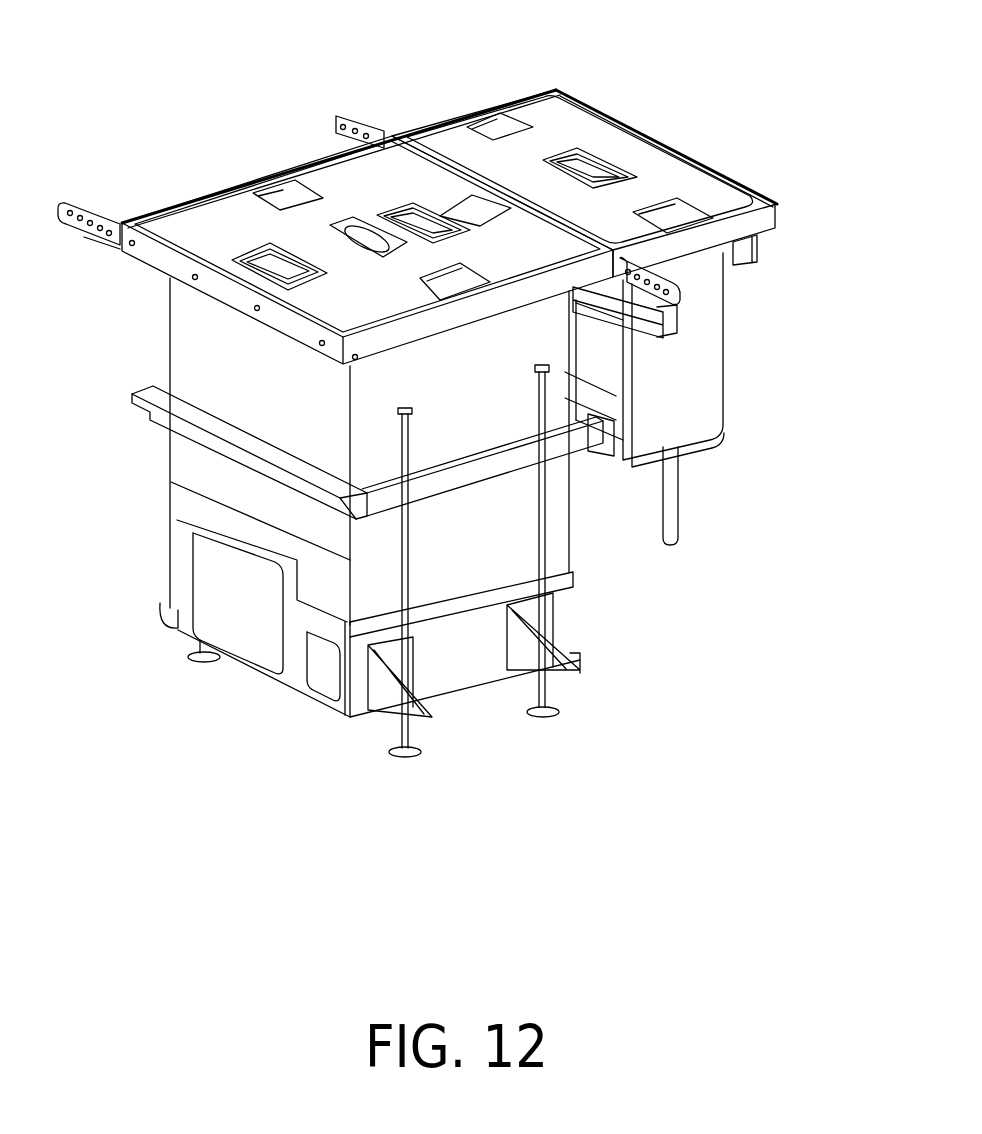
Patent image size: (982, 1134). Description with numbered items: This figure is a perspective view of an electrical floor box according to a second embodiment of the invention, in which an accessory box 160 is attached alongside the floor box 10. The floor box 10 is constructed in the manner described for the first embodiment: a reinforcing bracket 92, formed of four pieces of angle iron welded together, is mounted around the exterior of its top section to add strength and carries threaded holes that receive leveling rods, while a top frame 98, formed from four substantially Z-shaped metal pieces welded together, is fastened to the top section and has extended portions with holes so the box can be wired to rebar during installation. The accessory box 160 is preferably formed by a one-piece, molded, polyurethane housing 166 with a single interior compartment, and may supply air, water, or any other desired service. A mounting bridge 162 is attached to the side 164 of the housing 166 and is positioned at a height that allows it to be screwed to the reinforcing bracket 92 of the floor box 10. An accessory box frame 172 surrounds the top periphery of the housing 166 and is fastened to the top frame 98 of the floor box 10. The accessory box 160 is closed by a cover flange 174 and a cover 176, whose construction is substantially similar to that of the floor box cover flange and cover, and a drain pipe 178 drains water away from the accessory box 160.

The floor box 10 is at (168, 337).
The reinforcing bracket 92 is at (612, 460).
The top frame 98 is at (258, 186).
The accessory box 160 is at (591, 148).
The mounting bridge 162 is at (613, 407).
The side of the accessory box housing 164 is at (607, 357).
The housing 166 is at (723, 337).
The accessory box frame 172 is at (757, 255).
The cover flange 174 is at (554, 88).
The cover 176 is at (588, 135).
The drain pipe 178 is at (680, 503).